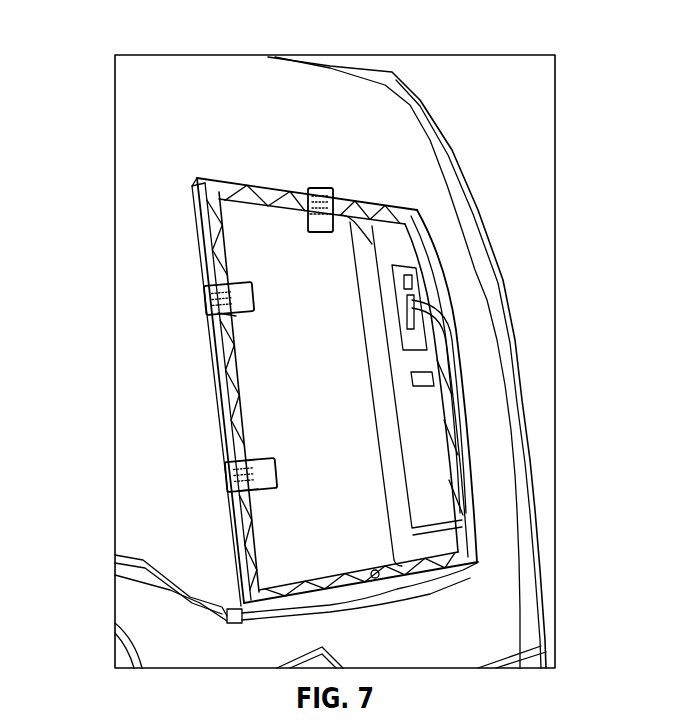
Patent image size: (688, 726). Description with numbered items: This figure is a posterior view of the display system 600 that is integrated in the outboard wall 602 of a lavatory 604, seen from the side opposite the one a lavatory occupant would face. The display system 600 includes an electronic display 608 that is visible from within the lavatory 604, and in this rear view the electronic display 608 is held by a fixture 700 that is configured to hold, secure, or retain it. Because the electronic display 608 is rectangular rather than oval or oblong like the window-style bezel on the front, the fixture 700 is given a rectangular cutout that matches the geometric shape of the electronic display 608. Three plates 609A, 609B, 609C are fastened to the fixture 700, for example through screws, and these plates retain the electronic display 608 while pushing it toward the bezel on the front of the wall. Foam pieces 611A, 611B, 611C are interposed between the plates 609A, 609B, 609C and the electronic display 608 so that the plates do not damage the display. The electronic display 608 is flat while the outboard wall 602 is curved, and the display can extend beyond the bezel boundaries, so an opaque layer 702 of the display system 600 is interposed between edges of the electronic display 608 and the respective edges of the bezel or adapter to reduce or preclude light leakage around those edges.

The display system 600 is at (428, 454).
The outboard wall 602 is at (132, 132).
The lavatory 604 is at (150, 112).
The electronic display 608 is at (274, 232).
The fixture 700 is at (200, 262).
The opaque layer 702 is at (232, 197).
The plate 609A is at (245, 296).
The plate 609B is at (267, 472).
The plate 609C is at (318, 200).
The foam piece 611A is at (224, 323).
The foam piece 611B is at (234, 505).
The foam piece 611C is at (324, 243).